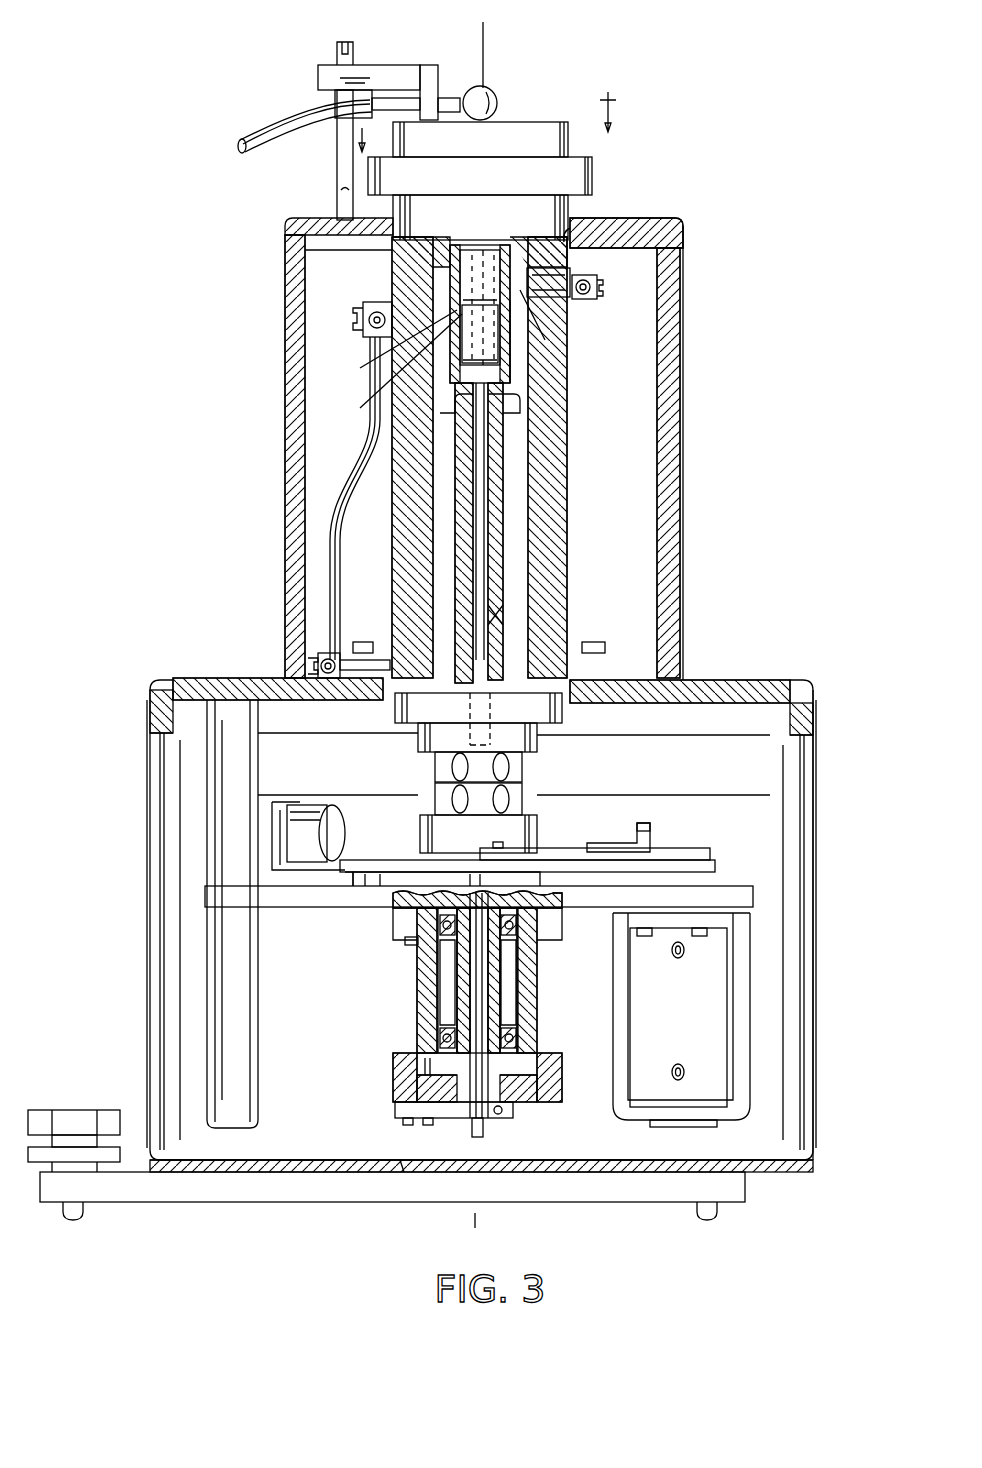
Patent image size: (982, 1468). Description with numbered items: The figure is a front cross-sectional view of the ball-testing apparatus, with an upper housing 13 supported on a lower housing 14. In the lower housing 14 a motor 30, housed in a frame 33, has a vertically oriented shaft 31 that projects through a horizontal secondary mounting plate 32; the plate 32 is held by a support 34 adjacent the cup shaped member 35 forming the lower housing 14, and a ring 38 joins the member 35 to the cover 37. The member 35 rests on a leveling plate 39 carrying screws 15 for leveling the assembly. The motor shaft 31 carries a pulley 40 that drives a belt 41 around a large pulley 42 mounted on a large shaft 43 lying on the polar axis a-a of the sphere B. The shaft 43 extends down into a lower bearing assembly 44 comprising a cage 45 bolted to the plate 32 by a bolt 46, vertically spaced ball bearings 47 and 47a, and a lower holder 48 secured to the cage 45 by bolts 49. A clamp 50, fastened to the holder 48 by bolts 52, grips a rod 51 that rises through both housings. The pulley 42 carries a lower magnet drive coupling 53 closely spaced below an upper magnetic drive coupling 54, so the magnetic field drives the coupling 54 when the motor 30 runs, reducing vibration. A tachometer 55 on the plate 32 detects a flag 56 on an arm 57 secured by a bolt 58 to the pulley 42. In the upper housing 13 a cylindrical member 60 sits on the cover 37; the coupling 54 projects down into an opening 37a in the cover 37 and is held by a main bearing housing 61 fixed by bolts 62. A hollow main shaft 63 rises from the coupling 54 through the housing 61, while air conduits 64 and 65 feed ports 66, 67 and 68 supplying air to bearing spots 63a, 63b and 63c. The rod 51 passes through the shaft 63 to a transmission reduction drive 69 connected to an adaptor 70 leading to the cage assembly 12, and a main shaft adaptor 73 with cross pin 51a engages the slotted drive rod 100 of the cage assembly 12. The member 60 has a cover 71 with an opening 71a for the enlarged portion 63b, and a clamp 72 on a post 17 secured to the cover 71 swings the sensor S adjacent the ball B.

The cage assembly 12 is at (558, 125).
The upper housing 13 is at (690, 398).
The lower housing 14 is at (812, 960).
The screws 15 is at (60, 1112).
The post 17 is at (335, 55).
The motor 30 is at (660, 1020).
The shaft 31 is at (690, 871).
The secondary mounting plate 32 is at (740, 892).
The frame 33 is at (738, 1006).
The support 34 is at (260, 1052).
The cup shaped member 35 is at (147, 893).
The cover 37 is at (206, 678).
The opening 37a is at (565, 702).
The ring 38 is at (800, 702).
The leveling plate 39 is at (340, 1203).
The pulley 40 is at (685, 850).
The belt 41 is at (560, 906).
The large pulley 42 is at (400, 858).
The large shaft 43 is at (455, 988).
The lower bearing assembly 44 is at (430, 978).
The cage 45 is at (430, 1018).
The bolt 46 is at (405, 940).
The ball bearing 47 is at (500, 988).
The ball bearing 47a is at (540, 1078).
The lower holder 48 is at (400, 1074).
The bolts 49 is at (400, 1107).
The clamp 50 is at (497, 1116).
The rod 51 is at (480, 492).
The cross pin 51a is at (452, 238).
The bolts 52 is at (428, 1126).
The lower magnet drive coupling 53 is at (515, 802).
The upper magnetic drive coupling 54 is at (435, 771).
The tachometer 55 is at (312, 868).
The flag 56 is at (652, 828).
The arm 57 is at (587, 851).
The bolt 58 is at (505, 843).
The cylindrical member 60 is at (285, 434).
The main bearing housing 61 is at (400, 574).
The bolts 62 is at (365, 640).
The main shaft 63 is at (500, 530).
The bearing spot 63a is at (340, 222).
The enlarged portion 63b is at (560, 280).
The bearing spot 63c is at (505, 668).
The air conduit 64 is at (355, 508).
The air conduit 65 is at (586, 300).
The port 66 is at (330, 652).
The port 67 is at (385, 307).
The port 68 is at (560, 330).
The transmission reduction drive 69 is at (510, 352).
The adaptor 70 is at (394, 343).
The cover 71 is at (665, 216).
The opening 71a is at (575, 232).
The clamp 72 is at (374, 64).
The main shaft adaptor 73 is at (397, 365).
The drive rod 100 is at (490, 242).
The sensor S is at (452, 97).
The ball B is at (493, 92).
The polar axis of rotation a is at (477, 626).